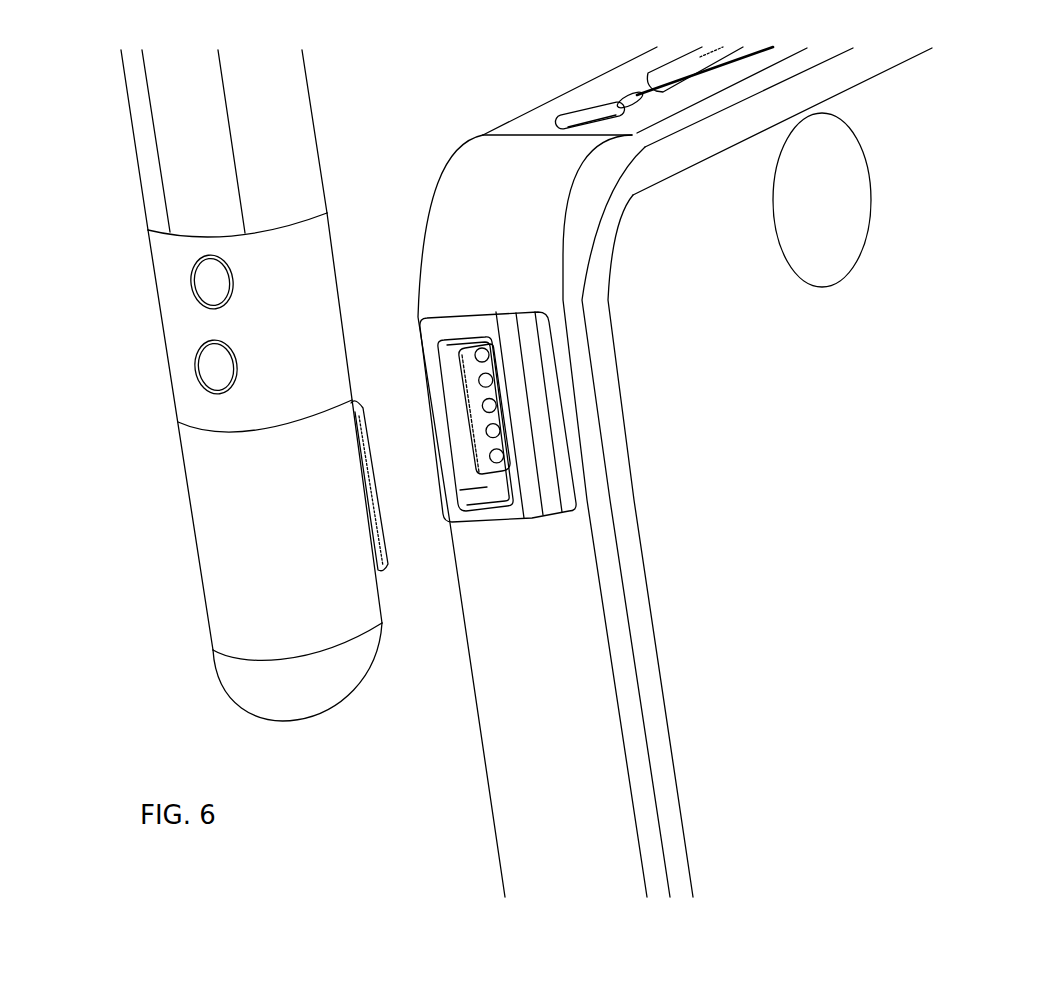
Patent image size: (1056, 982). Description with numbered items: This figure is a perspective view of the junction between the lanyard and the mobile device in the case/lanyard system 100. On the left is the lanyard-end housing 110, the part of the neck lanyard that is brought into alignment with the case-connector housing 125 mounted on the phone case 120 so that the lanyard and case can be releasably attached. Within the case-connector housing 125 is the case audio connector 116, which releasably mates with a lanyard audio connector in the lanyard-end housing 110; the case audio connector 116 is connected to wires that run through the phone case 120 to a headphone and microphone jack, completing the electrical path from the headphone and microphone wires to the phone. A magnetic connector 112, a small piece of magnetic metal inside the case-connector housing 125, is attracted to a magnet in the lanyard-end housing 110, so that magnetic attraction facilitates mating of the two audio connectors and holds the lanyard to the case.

The case/lanyard system 100 is at (475, 130).
The lanyard-end housing 110 is at (258, 567).
The magnetic connector 112 is at (490, 483).
The case audio connector 116 is at (483, 359).
The phone case 120 is at (510, 793).
The case-connector housing 125 is at (465, 323).